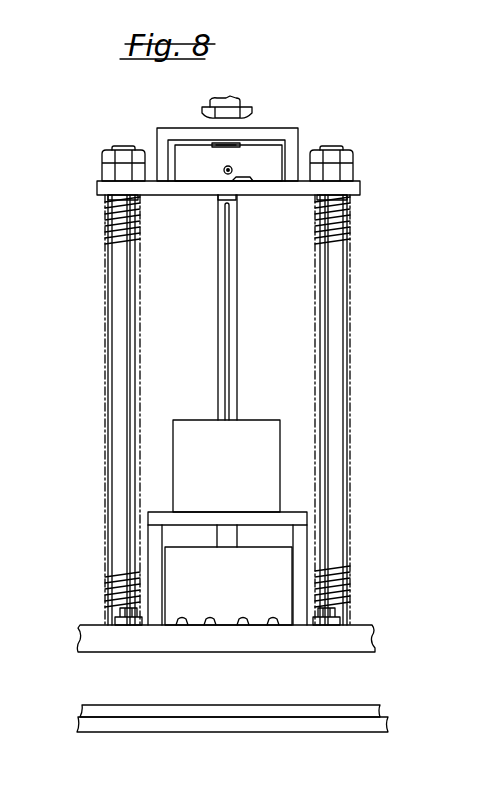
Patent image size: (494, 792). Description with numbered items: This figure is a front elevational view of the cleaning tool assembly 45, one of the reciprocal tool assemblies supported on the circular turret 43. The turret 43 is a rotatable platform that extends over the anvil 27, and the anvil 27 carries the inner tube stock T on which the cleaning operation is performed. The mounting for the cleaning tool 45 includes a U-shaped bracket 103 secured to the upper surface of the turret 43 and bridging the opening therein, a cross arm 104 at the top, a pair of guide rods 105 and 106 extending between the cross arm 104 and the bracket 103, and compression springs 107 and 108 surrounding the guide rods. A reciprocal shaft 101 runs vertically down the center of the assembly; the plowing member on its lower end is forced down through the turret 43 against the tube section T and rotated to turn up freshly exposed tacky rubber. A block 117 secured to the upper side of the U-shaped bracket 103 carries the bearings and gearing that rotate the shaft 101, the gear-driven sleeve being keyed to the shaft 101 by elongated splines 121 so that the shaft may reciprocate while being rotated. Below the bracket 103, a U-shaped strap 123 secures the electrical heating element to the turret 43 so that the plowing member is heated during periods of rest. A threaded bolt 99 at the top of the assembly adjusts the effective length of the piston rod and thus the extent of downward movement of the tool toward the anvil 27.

The cleaning tool assembly 45 is at (99, 331).
The threaded bolt 99 is at (253, 108).
The cross arm 104 is at (97, 190).
The compression spring 107 is at (107, 241).
The compression spring 108 is at (352, 243).
The guide rod 105 is at (117, 401).
The guide rod 106 is at (337, 345).
The reciprocal shaft 101 is at (218, 293).
The elongated splines 121 is at (229, 343).
The block 117 is at (250, 423).
The U-shaped bracket 103 is at (265, 515).
The U-shaped strap 123 is at (228, 586).
The turret 43 is at (94, 652).
The inner tube stock T is at (207, 712).
The anvil 27 is at (155, 725).